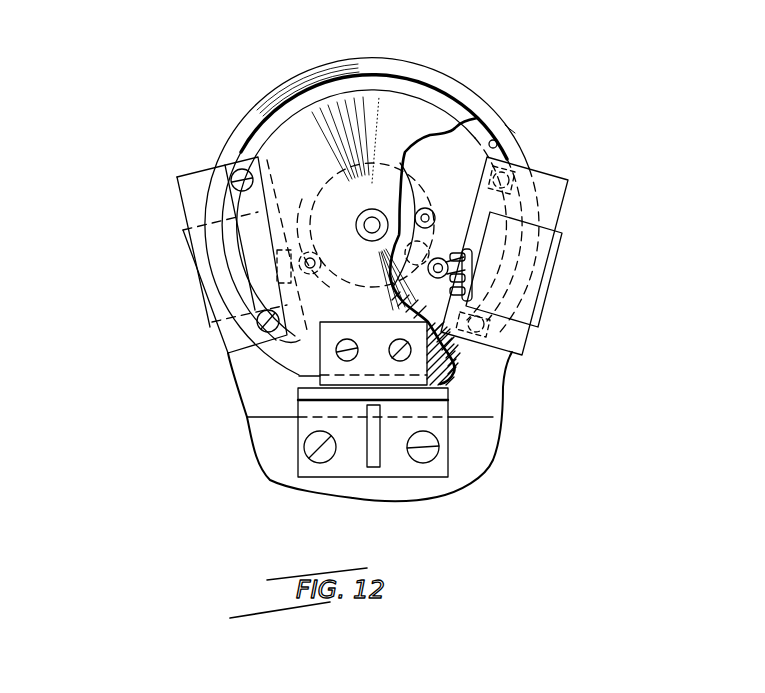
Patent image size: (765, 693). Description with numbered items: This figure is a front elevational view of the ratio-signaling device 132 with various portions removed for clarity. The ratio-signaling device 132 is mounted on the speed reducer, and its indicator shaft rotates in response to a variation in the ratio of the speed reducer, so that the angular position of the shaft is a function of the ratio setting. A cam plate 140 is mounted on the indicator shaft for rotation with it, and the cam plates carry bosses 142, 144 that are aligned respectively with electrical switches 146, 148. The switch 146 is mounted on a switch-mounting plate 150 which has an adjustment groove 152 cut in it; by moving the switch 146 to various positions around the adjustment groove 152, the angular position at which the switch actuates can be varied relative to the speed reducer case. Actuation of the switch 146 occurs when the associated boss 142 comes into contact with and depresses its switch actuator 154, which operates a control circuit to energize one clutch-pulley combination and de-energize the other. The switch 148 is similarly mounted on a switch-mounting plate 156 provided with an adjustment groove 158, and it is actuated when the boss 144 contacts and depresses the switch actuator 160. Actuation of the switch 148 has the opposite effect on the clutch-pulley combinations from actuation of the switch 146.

The ratio-signaling device 132 is at (176, 122).
The cam plate 140 is at (421, 181).
The boss 142 is at (440, 262).
The boss 144 is at (428, 204).
The electrical switch 146 is at (193, 280).
The electrical switch 148 is at (553, 282).
The switch-mounting plate 150 is at (285, 82).
The adjustment groove 152 is at (349, 67).
The switch actuator 154 is at (305, 231).
The switch-mounting plate 156 is at (511, 120).
The adjustment groove 158 is at (496, 143).
The switch actuator 160 is at (447, 256).